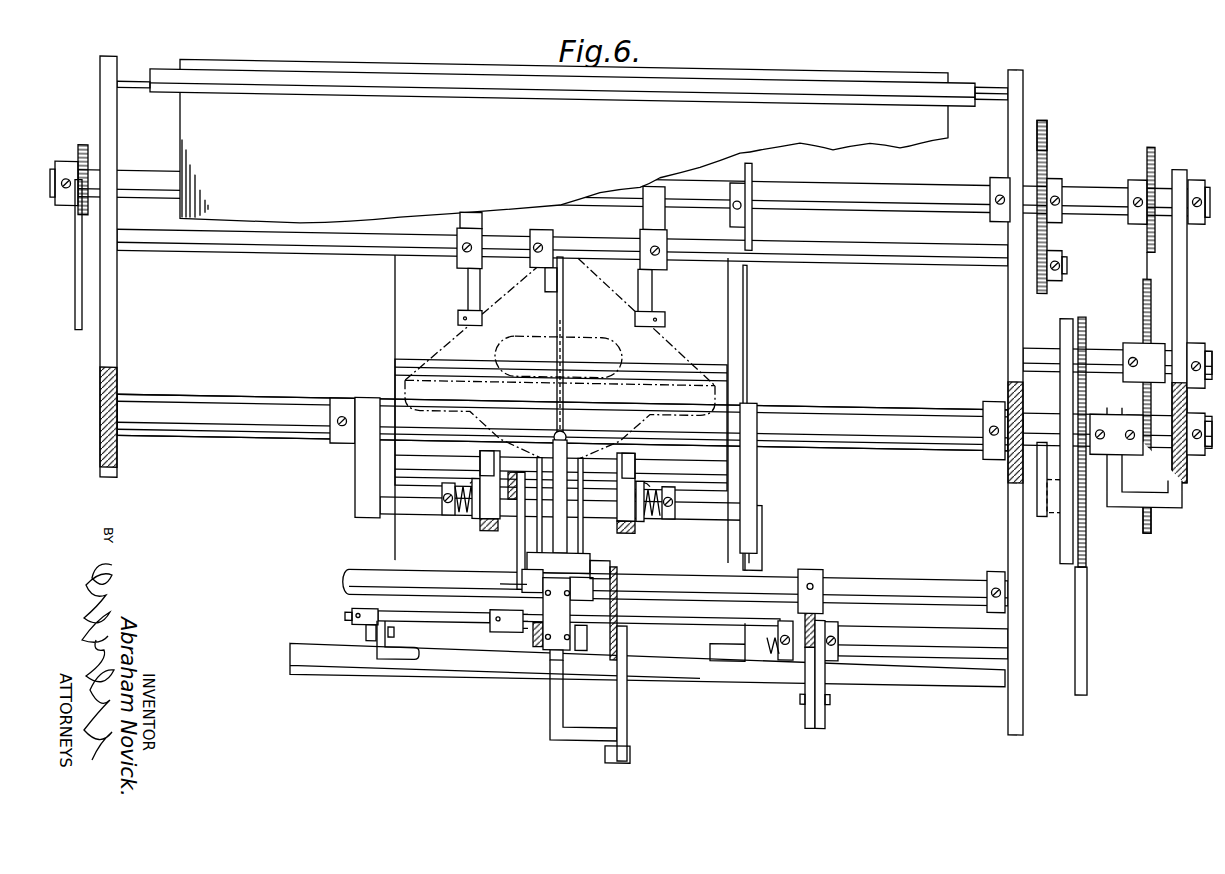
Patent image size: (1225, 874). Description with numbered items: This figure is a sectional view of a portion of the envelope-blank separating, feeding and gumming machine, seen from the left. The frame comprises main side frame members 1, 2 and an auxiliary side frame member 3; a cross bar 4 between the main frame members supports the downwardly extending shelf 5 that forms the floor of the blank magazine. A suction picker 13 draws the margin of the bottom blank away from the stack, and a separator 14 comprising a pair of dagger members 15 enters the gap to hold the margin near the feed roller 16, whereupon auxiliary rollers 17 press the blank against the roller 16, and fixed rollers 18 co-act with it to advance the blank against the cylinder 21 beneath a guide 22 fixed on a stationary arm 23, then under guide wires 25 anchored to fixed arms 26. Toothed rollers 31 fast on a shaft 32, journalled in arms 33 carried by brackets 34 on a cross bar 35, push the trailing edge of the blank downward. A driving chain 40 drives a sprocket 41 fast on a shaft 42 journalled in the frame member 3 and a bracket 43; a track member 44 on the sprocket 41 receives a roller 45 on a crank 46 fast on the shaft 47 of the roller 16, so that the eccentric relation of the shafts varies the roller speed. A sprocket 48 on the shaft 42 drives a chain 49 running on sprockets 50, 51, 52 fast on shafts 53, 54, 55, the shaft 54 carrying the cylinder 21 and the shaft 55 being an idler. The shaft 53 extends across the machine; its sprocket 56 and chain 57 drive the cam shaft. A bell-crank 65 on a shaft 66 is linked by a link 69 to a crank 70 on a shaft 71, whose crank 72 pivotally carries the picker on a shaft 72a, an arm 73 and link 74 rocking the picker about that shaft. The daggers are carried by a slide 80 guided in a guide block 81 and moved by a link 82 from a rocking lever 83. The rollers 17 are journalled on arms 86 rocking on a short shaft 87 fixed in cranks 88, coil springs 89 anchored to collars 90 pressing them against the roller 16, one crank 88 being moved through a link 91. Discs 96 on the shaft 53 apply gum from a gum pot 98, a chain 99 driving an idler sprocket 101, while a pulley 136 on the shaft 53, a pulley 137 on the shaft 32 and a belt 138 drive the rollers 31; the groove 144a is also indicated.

The main side frame member 1 is at (1020, 78).
The main side frame member 2 is at (105, 72).
The auxiliary side frame member 3 is at (1185, 305).
The cross bar 4 is at (163, 79).
The shelf 5 is at (250, 74).
The suction picker 13 is at (566, 436).
The separator 14 is at (590, 530).
The dagger members 15 is at (539, 458).
The feed roller 16 is at (405, 370).
The auxiliary rollers 17 is at (484, 460).
The rollers 18 is at (486, 532).
The cylinder 21 is at (395, 290).
The guide 22 is at (565, 310).
The stationary arm 23 is at (546, 283).
The guide strings or wires 25 is at (467, 290).
The fixed arms 26 is at (480, 300).
The rollers 31 is at (505, 630).
The shaft 32 is at (432, 622).
The arms 33 is at (355, 627).
The brackets 34 is at (380, 652).
The cross bar 35 is at (318, 672).
The driving chain 40 is at (1088, 605).
The sprocket 41 is at (1086, 538).
The shaft 42 is at (1162, 450).
The bracket 43 is at (1168, 506).
The track member 44 is at (1064, 555).
The roller 45 is at (1052, 512).
The crank 46 is at (1040, 470).
The shaft 47 is at (903, 428).
The sprocket 48 is at (1148, 400).
The chain 49 is at (1146, 270).
The sprocket 50 is at (1157, 172).
The sprocket 51 is at (1142, 528).
The sprocket 52 is at (1144, 300).
The shaft 53 is at (139, 176).
The shaft 54 is at (882, 412).
The idler shaft 55 is at (1045, 350).
The sprocket 56 is at (80, 218).
The chain 57 is at (76, 300).
The bell-crank 65 is at (618, 588).
The shaft 66 is at (930, 638).
The link 69 is at (822, 697).
The crank 70 is at (806, 696).
The shaft 71 is at (913, 584).
The crank 72 is at (557, 601).
The shaft 72a is at (510, 588).
The arm 73 is at (517, 560).
The link 74 is at (512, 475).
The slide 80 is at (553, 704).
The guide block 81 is at (548, 660).
The link 82 is at (627, 694).
The rocking lever 83 is at (608, 584).
The arms 86 is at (482, 470).
The short shaft 87 is at (710, 512).
The cranks 88 is at (375, 465).
The coil springs 89 is at (470, 490).
The collar 90 is at (446, 518).
The link 91 is at (763, 540).
The discs 96 is at (470, 212).
The gum pot 98 is at (1048, 170).
The chain 99 is at (1048, 138).
The idler sprocket 101 is at (1048, 286).
The pulley 136 is at (753, 184).
The pulley 137 is at (725, 632).
The belt 138 is at (748, 341).
The slot 144a is at (560, 322).